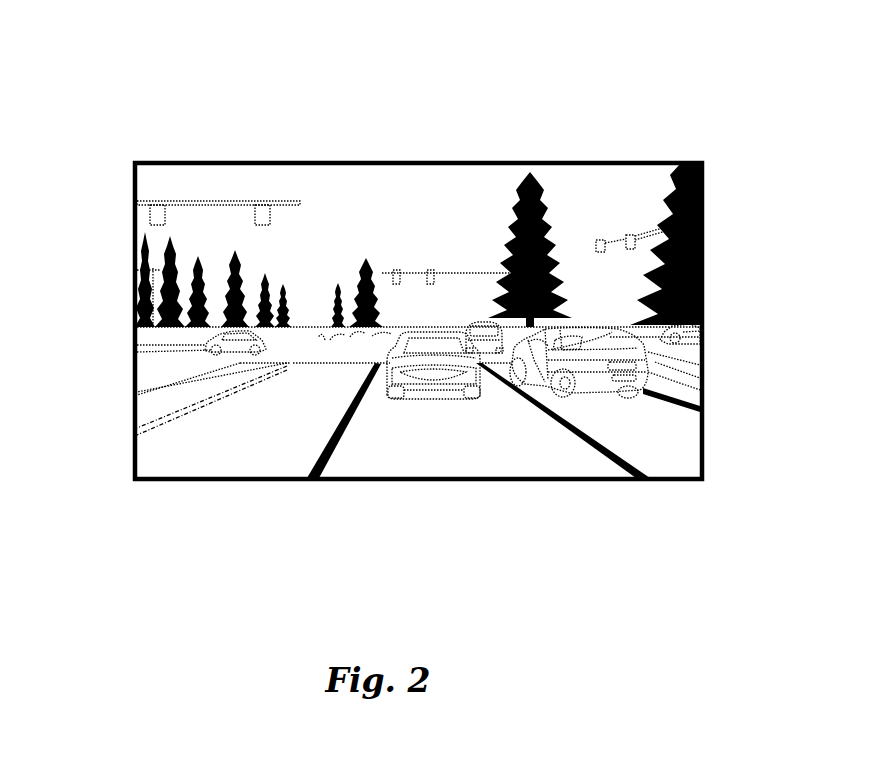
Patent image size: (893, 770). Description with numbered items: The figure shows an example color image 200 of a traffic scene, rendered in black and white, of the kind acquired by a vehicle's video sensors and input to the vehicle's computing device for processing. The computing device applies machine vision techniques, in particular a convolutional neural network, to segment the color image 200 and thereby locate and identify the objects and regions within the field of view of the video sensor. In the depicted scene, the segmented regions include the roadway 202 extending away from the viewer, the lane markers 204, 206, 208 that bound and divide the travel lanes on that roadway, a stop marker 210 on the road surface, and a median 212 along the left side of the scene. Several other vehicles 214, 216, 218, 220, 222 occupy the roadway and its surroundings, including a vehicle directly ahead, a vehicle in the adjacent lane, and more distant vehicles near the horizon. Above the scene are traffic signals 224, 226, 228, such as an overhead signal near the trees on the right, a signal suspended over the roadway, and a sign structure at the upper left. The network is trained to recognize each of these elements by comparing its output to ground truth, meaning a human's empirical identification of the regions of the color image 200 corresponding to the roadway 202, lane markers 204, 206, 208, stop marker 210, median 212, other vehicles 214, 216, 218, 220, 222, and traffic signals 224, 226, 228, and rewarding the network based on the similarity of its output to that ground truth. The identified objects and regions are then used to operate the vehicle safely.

The color image 200 is at (394, 36).
The roadway 202 is at (396, 452).
The lane marker 204 is at (342, 442).
The lane marker 206 is at (595, 455).
The lane marker 208 is at (680, 407).
The stop marker 210 is at (327, 363).
The median 212 is at (182, 412).
The other vehicle 214 is at (450, 397).
The other vehicle 216 is at (602, 388).
The other vehicle 218 is at (688, 340).
The other vehicle 220 is at (473, 322).
The other vehicle 222 is at (217, 343).
The traffic signal 224 is at (613, 238).
The traffic signal 226 is at (408, 273).
The traffic signal 228 is at (213, 205).